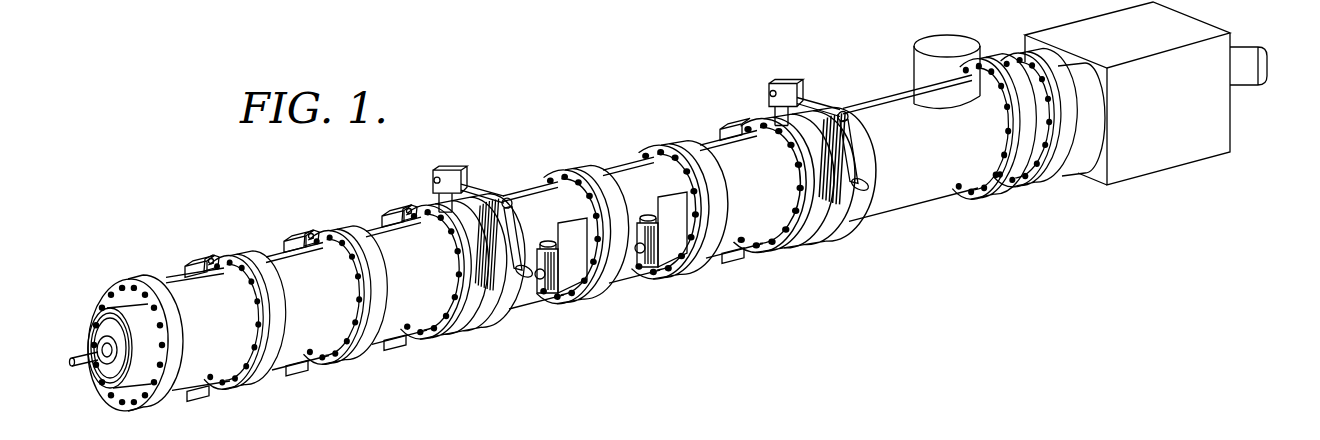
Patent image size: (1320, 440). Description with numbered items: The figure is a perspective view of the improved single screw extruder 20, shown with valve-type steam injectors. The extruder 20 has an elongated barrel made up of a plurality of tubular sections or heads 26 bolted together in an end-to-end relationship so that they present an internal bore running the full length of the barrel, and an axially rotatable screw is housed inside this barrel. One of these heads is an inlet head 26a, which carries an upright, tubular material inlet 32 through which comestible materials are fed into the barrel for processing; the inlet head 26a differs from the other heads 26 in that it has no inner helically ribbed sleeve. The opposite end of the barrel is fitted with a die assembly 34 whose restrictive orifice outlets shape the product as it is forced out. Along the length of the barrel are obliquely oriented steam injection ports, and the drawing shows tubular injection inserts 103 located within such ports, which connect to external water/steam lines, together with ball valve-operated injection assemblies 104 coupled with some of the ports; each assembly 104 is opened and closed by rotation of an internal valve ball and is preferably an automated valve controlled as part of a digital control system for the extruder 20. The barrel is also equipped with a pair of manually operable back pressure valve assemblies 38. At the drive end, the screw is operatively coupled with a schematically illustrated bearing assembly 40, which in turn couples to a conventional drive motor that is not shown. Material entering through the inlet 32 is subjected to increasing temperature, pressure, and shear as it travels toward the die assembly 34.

The single screw extruder 20 is at (1086, 240).
The tubular sections or heads 26 is at (297, 349).
The inlet head 26a is at (960, 188).
The material inlet 32 is at (945, 40).
The die assembly 34 is at (99, 278).
The back pressure valve assemblies 38 is at (470, 162).
The bearing assembly 40 is at (1170, 152).
The tubular injection inserts 103 is at (311, 236).
The ball valve-operated injection assemblies 104 is at (540, 308).